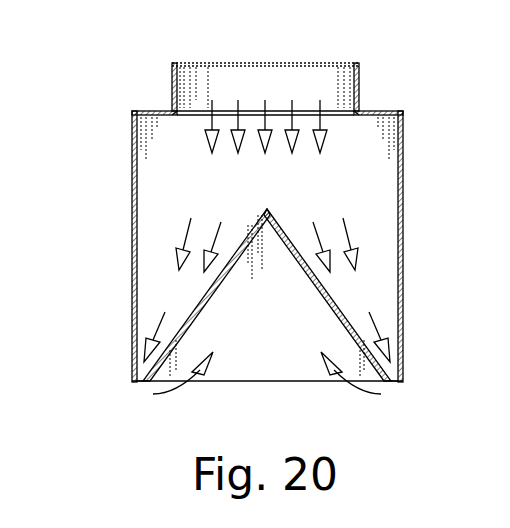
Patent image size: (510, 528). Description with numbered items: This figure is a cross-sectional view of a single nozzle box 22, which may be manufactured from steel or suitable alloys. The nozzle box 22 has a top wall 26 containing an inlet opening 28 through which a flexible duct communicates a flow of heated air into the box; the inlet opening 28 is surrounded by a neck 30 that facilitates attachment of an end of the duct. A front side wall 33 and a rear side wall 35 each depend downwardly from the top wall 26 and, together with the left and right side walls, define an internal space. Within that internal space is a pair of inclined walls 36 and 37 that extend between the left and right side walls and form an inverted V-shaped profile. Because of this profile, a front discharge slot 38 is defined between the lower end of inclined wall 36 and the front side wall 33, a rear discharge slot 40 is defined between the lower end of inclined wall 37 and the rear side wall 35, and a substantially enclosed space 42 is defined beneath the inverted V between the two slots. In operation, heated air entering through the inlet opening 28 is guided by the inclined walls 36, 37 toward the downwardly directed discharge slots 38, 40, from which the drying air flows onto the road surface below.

The nozzle box 22 is at (100, 119).
The top wall 26 is at (382, 111).
The inlet opening 28 is at (253, 110).
The neck 30 is at (172, 85).
The front side wall 33 is at (132, 214).
The rear side wall 35 is at (403, 210).
The inclined wall 36 is at (207, 297).
The inclined wall 37 is at (328, 297).
The front discharge slot 38 is at (138, 386).
The rear discharge slot 40 is at (395, 386).
The substantially enclosed space 42 is at (288, 331).